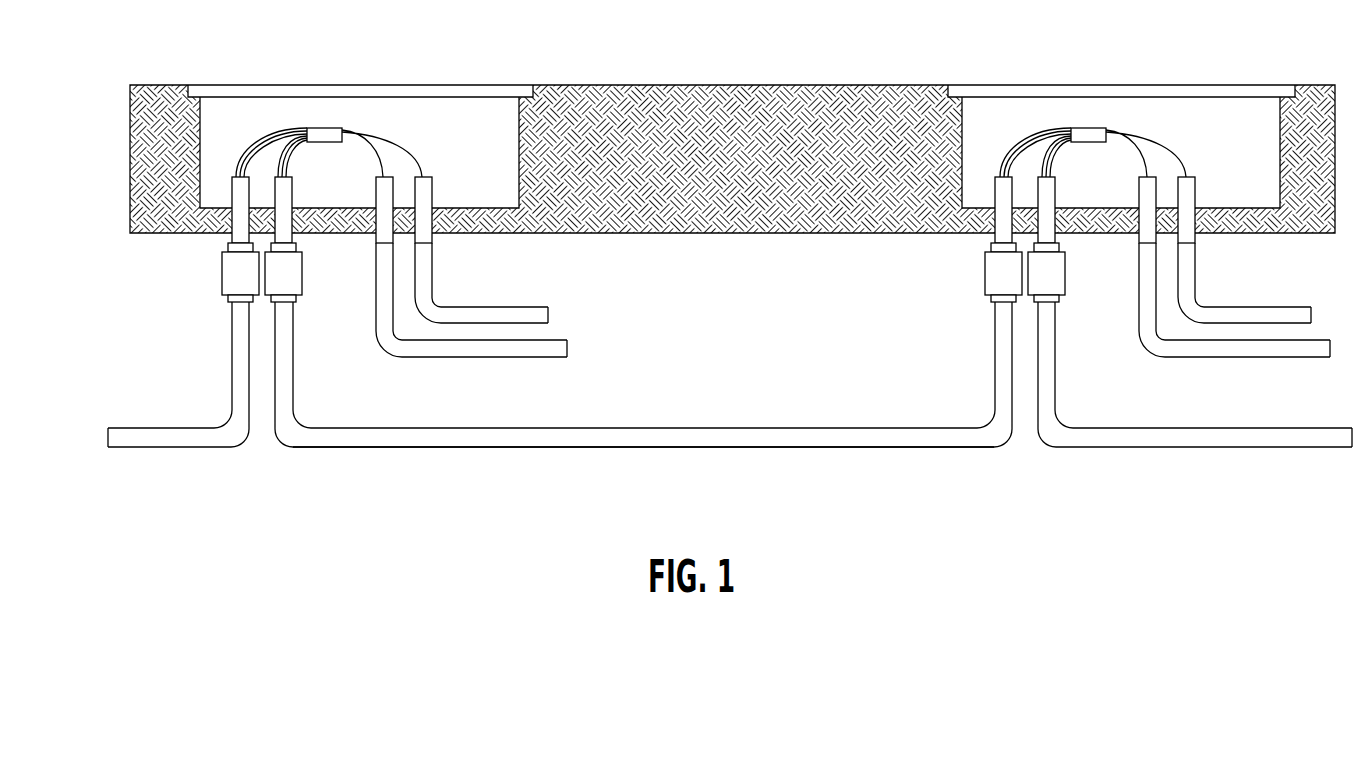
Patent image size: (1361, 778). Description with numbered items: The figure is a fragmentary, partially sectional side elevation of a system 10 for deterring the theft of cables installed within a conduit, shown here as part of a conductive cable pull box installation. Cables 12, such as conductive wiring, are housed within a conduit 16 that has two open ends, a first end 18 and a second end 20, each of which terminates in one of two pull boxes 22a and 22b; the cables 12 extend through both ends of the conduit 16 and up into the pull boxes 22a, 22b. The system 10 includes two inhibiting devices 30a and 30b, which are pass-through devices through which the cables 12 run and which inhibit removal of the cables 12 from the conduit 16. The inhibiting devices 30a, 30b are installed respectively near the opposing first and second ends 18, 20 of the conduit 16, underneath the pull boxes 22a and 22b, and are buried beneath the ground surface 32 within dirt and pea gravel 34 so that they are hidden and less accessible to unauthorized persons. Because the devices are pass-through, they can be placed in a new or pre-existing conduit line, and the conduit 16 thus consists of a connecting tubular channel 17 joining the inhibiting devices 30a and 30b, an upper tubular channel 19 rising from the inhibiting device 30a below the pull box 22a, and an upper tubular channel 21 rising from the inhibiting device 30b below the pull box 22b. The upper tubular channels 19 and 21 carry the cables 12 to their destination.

The system 10 is at (699, 252).
The cables 12 is at (268, 135).
The conduit 16 is at (650, 428).
The connecting tubular channel 17 is at (428, 447).
The first end 18 is at (242, 177).
The upper tubular channel 19 is at (276, 190).
The second end 20 is at (1003, 178).
The upper tubular channel 21 is at (997, 189).
The pull box 22a is at (358, 85).
The pull box 22b is at (1120, 85).
The inhibiting device 30a is at (280, 293).
The inhibiting device 30b is at (1003, 285).
The ground surface 32 is at (720, 85).
The dirt and pea gravel 34 is at (716, 179).